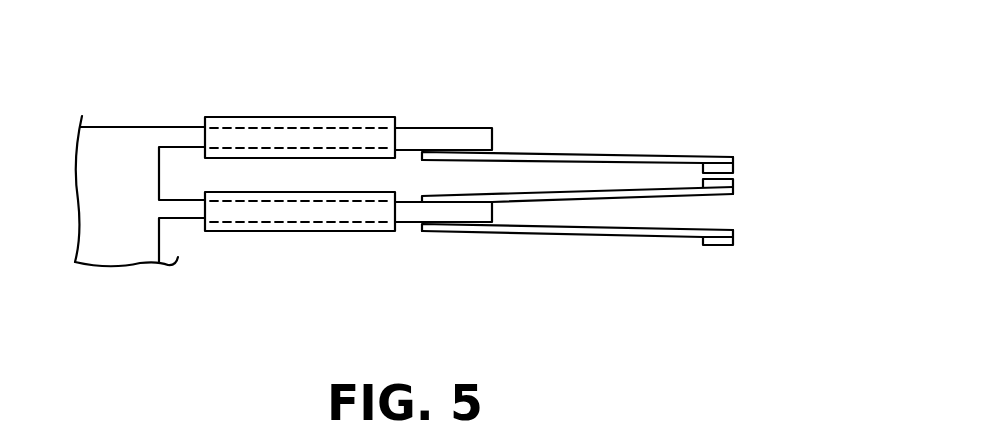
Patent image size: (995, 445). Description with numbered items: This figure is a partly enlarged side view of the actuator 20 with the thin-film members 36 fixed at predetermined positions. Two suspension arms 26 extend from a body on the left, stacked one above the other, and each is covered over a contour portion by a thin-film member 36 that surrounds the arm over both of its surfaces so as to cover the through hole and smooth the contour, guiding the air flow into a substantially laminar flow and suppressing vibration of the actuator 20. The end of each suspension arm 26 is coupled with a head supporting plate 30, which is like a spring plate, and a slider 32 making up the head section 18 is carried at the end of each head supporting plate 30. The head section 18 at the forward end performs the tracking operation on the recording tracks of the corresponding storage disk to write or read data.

The actuator 20 is at (122, 116).
The thin-film member 36 is at (285, 106).
The suspension arm 26 is at (437, 128).
The head supporting plate 30 is at (572, 152).
The head section 18 is at (717, 166).
The slider 32 is at (715, 245).